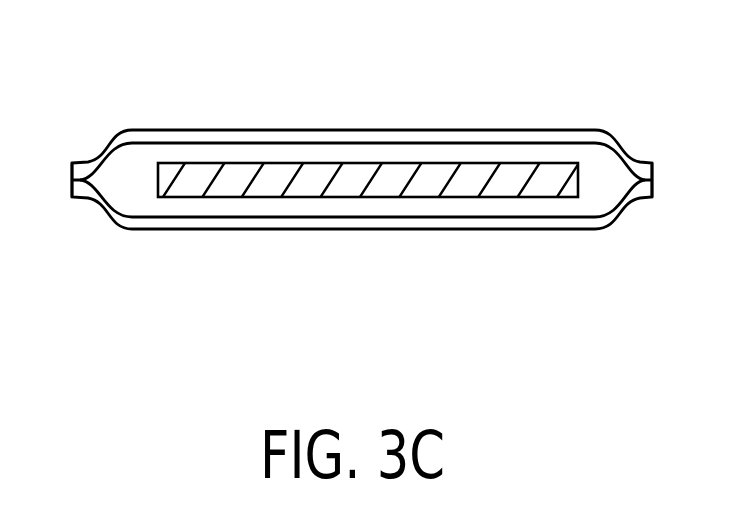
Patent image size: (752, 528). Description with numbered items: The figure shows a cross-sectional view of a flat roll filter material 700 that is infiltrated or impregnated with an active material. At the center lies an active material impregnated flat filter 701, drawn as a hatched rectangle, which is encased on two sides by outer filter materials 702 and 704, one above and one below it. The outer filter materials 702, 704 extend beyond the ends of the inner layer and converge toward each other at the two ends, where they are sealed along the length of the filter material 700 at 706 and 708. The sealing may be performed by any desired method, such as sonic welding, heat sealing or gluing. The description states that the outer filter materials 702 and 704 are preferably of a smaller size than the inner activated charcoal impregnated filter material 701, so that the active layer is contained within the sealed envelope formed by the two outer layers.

The flat roll filter material 700 is at (322, 100).
The active material impregnated flat filter 701 is at (560, 168).
The outer filter material 702 is at (400, 130).
The outer filter material 704 is at (438, 230).
The seal 706 is at (83, 158).
The seal 708 is at (642, 185).